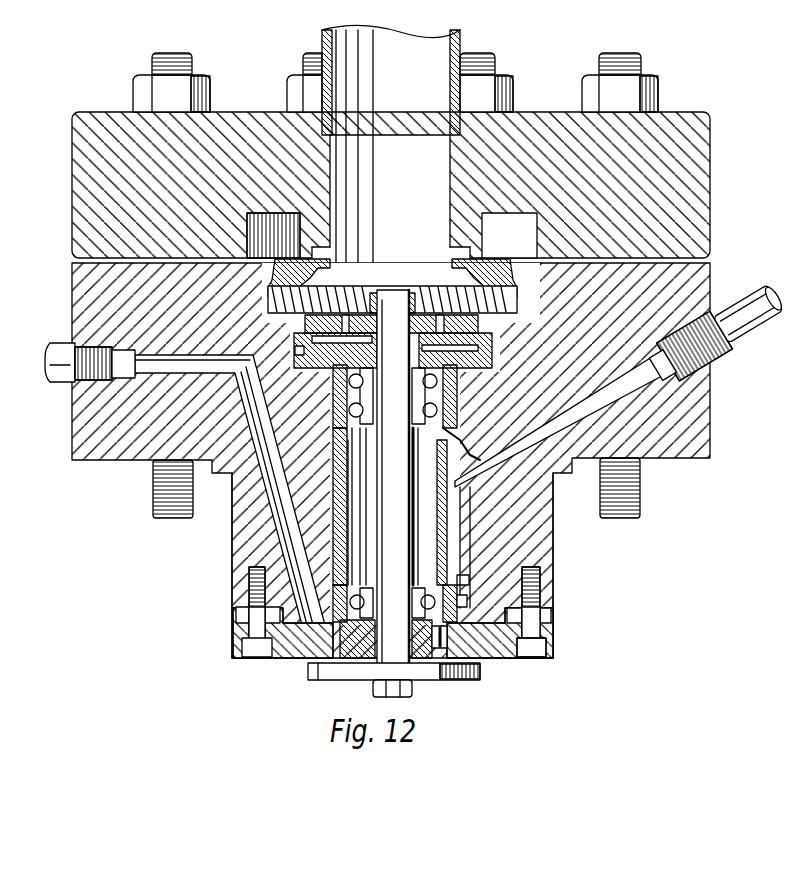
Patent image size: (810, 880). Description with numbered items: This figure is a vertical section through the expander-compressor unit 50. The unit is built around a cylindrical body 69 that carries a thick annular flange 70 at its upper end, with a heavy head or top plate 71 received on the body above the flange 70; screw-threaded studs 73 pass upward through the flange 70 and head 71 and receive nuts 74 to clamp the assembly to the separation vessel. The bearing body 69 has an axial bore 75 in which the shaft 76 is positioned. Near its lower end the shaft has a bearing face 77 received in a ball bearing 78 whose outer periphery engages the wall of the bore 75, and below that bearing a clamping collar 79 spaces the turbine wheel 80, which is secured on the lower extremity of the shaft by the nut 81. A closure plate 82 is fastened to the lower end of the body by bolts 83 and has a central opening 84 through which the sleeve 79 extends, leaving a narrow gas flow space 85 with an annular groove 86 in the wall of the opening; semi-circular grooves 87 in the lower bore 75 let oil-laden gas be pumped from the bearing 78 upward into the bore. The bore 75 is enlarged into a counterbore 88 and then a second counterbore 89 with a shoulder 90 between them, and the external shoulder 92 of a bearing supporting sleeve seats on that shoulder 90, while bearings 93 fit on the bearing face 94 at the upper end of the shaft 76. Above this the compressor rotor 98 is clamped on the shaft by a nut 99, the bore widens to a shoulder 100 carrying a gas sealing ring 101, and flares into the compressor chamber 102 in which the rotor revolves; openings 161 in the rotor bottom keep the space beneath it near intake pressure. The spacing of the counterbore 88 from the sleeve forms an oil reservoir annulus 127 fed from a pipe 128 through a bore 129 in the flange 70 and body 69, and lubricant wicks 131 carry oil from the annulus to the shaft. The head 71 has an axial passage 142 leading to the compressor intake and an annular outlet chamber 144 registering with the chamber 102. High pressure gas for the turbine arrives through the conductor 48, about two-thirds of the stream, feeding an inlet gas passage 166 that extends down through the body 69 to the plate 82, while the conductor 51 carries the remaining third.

The conductor 48 is at (66, 354).
The expander-compressor unit 50 is at (545, 556).
The conductor 51 is at (402, 34).
The cylindrical body 69 is at (231, 548).
The annular flange 70 is at (708, 404).
The head or top plate 71 is at (700, 162).
The screw-threaded studs 73 is at (153, 495).
The nuts 74 is at (656, 96).
The axial bore 75 is at (457, 561).
The shaft 76 is at (374, 466).
The bearing face 77 is at (384, 599).
The ball bearing 78 is at (452, 586).
The clamping collar 79 is at (370, 672).
The turbine wheel 80 is at (460, 680).
The nut 81 is at (412, 690).
The closure plate 82 is at (553, 622).
The bolts 83 is at (530, 659).
The central opening 84 is at (368, 640).
The gas flow space 85 is at (472, 656).
The annular groove 86 is at (447, 638).
The semi-circular grooves 87 is at (457, 606).
The counterbore 88 is at (340, 506).
The second counterbore 89 is at (457, 405).
The shoulder 90 is at (457, 447).
The external shoulder 92 is at (333, 440).
The bearings 93 is at (340, 393).
The bearing face 94 is at (401, 428).
The compressor rotor 98 is at (408, 283).
The nut 99 is at (378, 292).
The shoulder 100 is at (294, 350).
The gas sealing ring 101 is at (300, 374).
The compressor chamber 102 is at (530, 312).
The oil reservoir annulus 127 is at (460, 514).
The pipe 128 is at (745, 334).
The bore 129 is at (582, 404).
The lubricant wicks 131 is at (412, 490).
The axial passage 142 is at (390, 196).
The annular outlet chamber 144 is at (509, 235).
The openings 161 is at (486, 333).
The inlet gas passage 166 is at (184, 373).